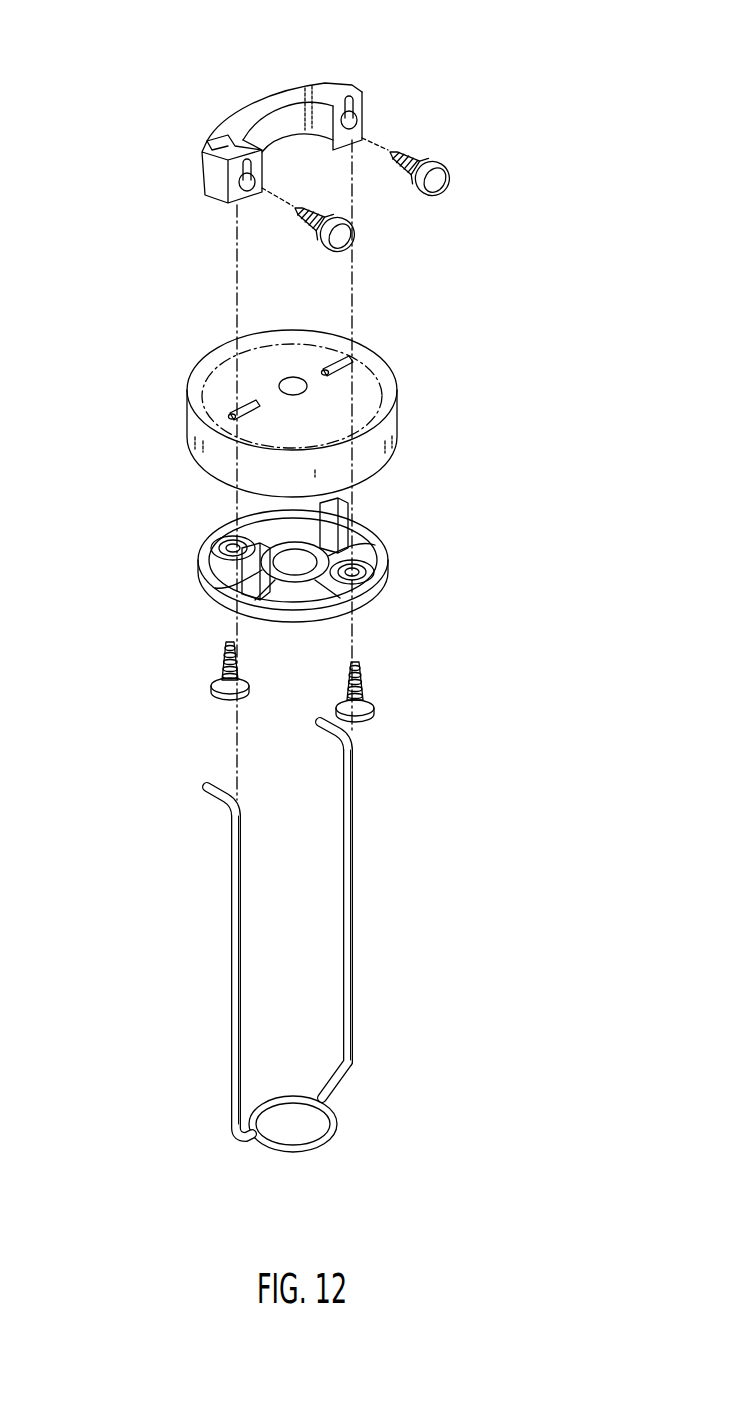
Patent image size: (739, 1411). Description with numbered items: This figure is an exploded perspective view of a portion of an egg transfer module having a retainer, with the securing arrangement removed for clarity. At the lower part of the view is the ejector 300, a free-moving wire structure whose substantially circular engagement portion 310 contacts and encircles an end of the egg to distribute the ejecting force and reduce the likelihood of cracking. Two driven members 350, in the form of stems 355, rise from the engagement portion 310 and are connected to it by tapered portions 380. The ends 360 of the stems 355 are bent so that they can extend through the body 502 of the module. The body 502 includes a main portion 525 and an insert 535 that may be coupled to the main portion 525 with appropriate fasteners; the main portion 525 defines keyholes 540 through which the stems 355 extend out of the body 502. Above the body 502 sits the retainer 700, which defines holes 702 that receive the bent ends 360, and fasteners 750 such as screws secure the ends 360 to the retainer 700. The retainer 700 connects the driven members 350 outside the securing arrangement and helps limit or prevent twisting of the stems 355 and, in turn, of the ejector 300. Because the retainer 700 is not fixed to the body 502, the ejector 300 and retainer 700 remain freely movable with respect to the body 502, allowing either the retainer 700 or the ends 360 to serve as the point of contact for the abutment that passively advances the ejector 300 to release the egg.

The ejector 300 is at (299, 949).
The engagement portion 310 is at (313, 1166).
The driven member 350 is at (279, 928).
The stem 355 is at (231, 888).
The end 360 is at (183, 788).
The tapered portion 380 is at (345, 1083).
The body 502 is at (267, 501).
The main portion 525 is at (396, 432).
The insert 535 is at (388, 580).
The keyhole 540 is at (368, 336).
The retainer 700 is at (321, 107).
The hole 702 is at (370, 118).
The fastener 750 is at (452, 160).